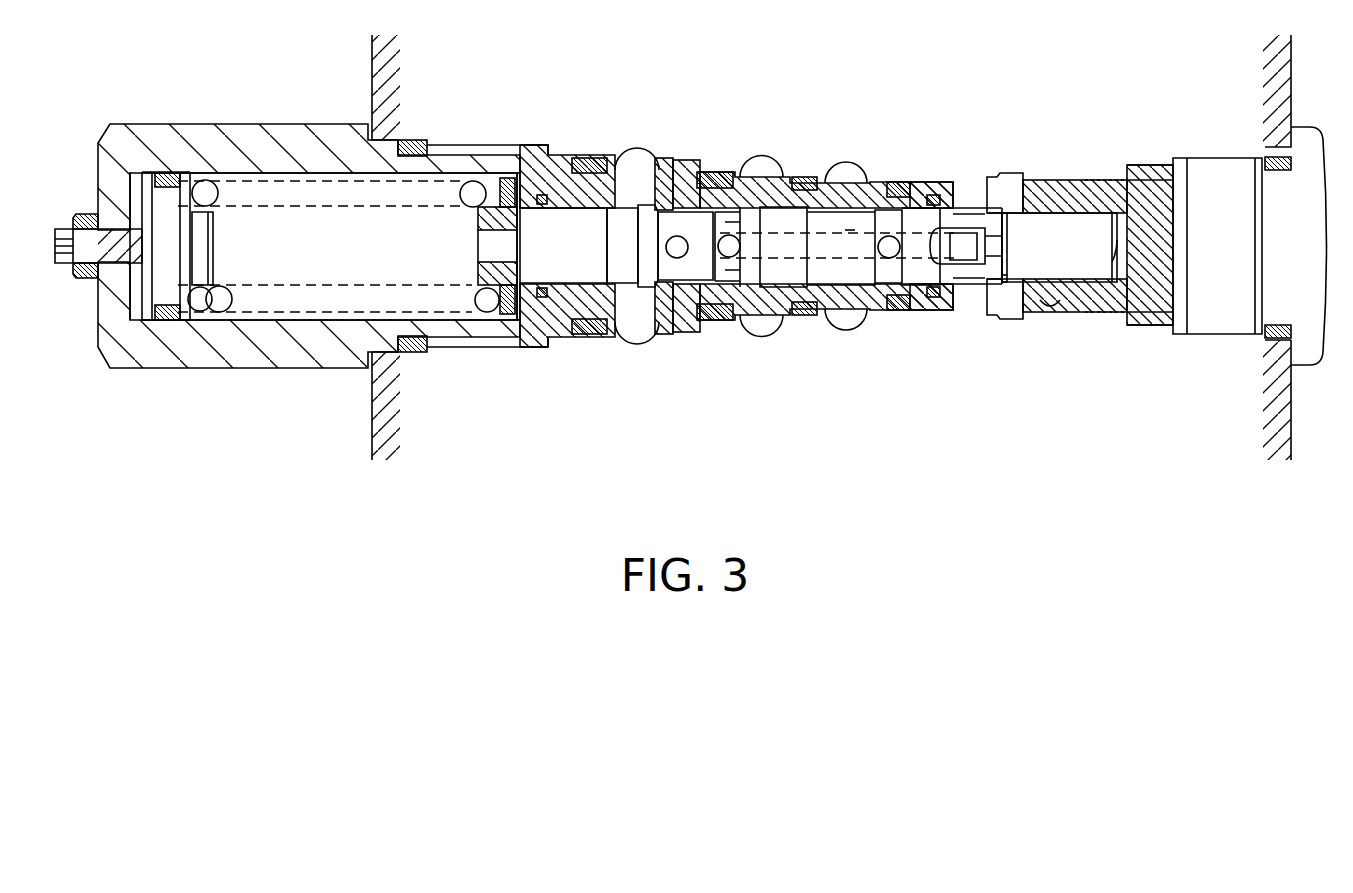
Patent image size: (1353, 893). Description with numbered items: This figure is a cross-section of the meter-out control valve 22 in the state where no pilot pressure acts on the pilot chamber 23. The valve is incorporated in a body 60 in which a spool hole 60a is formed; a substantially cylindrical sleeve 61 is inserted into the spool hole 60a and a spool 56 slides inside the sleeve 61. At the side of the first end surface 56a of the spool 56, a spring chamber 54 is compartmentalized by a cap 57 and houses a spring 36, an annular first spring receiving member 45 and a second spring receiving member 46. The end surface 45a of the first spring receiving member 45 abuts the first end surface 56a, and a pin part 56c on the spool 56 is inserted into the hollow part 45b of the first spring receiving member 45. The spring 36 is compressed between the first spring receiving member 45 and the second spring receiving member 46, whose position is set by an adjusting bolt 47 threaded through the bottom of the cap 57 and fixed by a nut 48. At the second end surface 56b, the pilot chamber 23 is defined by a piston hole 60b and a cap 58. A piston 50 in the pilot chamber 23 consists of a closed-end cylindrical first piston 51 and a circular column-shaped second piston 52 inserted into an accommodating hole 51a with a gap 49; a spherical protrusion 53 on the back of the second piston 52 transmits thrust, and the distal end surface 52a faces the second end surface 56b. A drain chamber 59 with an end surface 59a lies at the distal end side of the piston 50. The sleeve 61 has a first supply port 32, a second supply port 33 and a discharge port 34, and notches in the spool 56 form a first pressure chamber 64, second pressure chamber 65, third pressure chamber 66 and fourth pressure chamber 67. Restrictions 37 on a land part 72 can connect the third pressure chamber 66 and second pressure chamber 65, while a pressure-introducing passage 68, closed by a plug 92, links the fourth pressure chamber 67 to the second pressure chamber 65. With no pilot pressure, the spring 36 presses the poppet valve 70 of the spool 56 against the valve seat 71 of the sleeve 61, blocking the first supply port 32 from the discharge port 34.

The meter-out control valve 22 is at (830, 140).
The pilot chamber 23 is at (1157, 173).
The first supply port 32 is at (760, 298).
The second supply port 33 is at (847, 298).
The discharge port 34 is at (638, 317).
The spring 36 is at (205, 190).
The restrictions 37 is at (722, 213).
The first spring receiving member 45 is at (512, 287).
The end surface 45a is at (528, 288).
The hollow part 45b is at (485, 292).
The second spring receiving member 46 is at (168, 203).
The adjusting bolt 47 is at (97, 225).
The nut 48 is at (83, 267).
The gap 49 is at (1042, 212).
The piston 50 is at (1133, 118).
The first piston 51 is at (1108, 202).
The accommodating hole 51a is at (1112, 280).
The second piston 52 is at (1065, 233).
The distal end surface 52a is at (993, 285).
The spherical protrusion 53 is at (1117, 243).
The spring chamber 54 is at (265, 232).
The spool 56 is at (614, 206).
The first end surface 56a is at (503, 197).
The second end surface 56b is at (1015, 243).
The pin part 56c is at (503, 243).
The cap 57 is at (328, 140).
The cap 58 is at (1223, 177).
The drain chamber 59 is at (1017, 308).
The end surface 59a is at (992, 290).
The body 60 is at (1282, 58).
The spool hole 60a is at (922, 195).
The piston hole 60b is at (1070, 302).
The sleeve 61 is at (880, 197).
The first pressure chamber 64 is at (620, 290).
The second pressure chamber 65 is at (690, 285).
The third pressure chamber 66 is at (793, 283).
The fourth pressure chamber 67 is at (887, 277).
The pressure-introducing passage 68 is at (848, 235).
The poppet valve 70 is at (657, 227).
The valve seat 71 is at (667, 165).
The land part 72 is at (757, 215).
The plug 92 is at (965, 250).